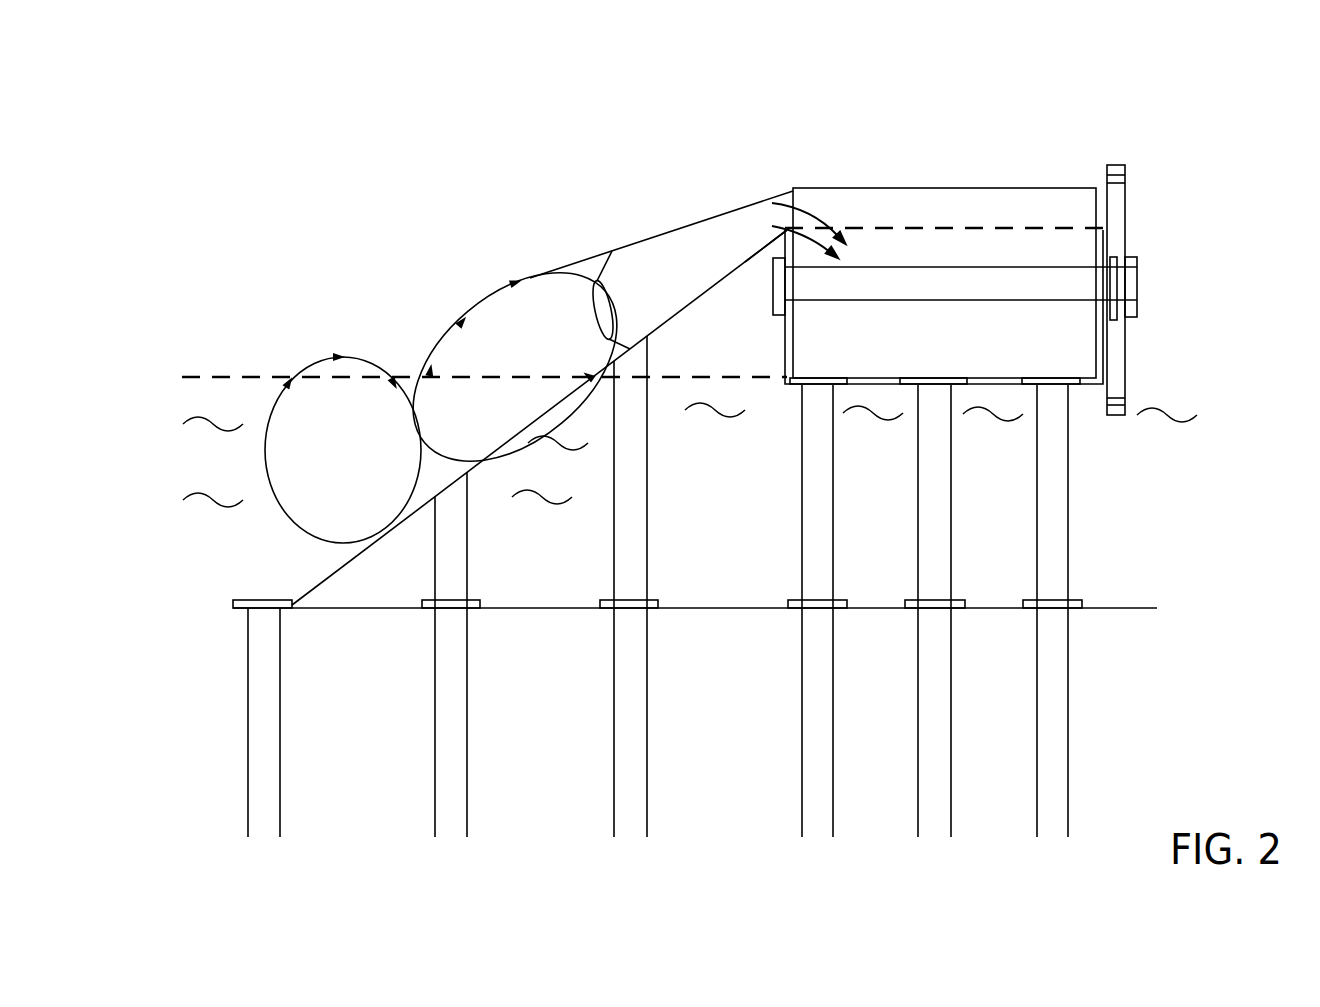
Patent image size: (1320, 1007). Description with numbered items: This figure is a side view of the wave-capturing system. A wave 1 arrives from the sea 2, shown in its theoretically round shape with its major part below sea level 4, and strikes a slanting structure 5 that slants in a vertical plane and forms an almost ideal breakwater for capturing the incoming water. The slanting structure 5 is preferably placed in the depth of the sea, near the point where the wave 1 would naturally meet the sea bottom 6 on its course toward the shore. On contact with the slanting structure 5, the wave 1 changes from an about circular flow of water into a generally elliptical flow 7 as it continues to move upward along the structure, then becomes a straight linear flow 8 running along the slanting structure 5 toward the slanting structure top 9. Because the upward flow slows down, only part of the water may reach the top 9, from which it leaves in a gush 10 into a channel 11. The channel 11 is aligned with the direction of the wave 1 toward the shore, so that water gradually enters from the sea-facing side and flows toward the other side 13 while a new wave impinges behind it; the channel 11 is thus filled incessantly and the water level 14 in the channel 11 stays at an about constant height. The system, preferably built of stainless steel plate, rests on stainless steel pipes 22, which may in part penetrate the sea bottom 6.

The wave 1 is at (357, 358).
The sea 2 is at (172, 437).
The sea level 4 is at (248, 377).
The slanting structure 5 is at (324, 581).
The sea bottom 6 is at (550, 608).
The second vortex 7 is at (467, 307).
The straight linear flow 8 is at (636, 240).
The slanting structure top 9 is at (757, 252).
The gush 10 is at (808, 203).
The channel 11 is at (878, 188).
The other side of channel 13 is at (965, 228).
The water level 14 is at (1012, 228).
The stainless steel pipes 22 is at (806, 488).